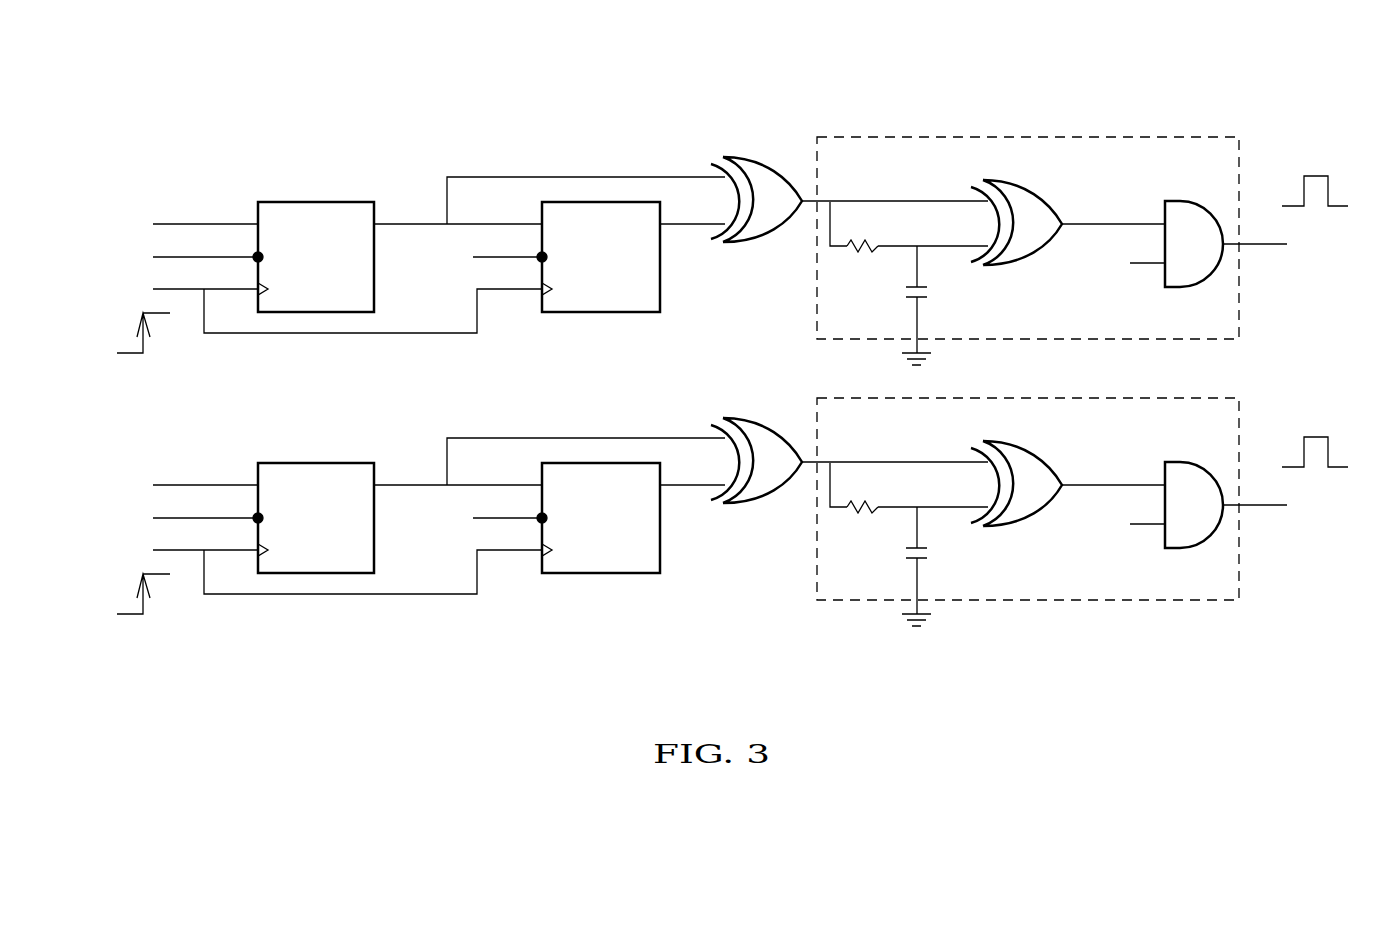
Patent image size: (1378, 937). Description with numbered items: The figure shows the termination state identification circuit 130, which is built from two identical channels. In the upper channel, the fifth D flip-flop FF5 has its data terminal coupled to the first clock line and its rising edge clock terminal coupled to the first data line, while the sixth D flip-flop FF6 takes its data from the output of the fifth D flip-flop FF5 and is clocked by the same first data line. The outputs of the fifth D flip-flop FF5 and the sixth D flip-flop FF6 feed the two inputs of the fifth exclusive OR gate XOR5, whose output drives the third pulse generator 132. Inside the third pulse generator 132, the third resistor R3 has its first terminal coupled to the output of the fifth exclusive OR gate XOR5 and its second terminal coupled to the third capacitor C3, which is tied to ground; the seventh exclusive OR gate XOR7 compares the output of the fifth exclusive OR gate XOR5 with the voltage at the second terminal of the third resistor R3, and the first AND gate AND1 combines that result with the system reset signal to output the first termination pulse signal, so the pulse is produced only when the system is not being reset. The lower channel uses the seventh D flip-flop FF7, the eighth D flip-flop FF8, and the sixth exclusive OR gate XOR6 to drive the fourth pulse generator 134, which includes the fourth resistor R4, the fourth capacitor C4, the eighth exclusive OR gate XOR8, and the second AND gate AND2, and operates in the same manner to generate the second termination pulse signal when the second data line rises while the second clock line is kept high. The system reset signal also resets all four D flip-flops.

The termination state identification circuit 130 is at (1131, 68).
The third pulse generator 132 is at (1028, 137).
The fourth pulse generator 134 is at (1029, 533).
The fifth D flip-flop FF5 is at (316, 202).
The sixth D flip-flop FF6 is at (600, 312).
The seventh D flip-flop FF7 is at (316, 490).
The eighth D flip-flop FF8 is at (601, 546).
The fifth exclusive OR gate XOR5 is at (757, 245).
The sixth exclusive OR gate XOR6 is at (757, 493).
The seventh exclusive OR gate XOR7 is at (1015, 267).
The eighth exclusive OR gate XOR8 is at (1017, 515).
The first AND gate AND1 is at (1196, 201).
The second AND gate AND2 is at (1202, 477).
The third resistor R3 is at (865, 262).
The fourth resistor R4 is at (865, 523).
The third capacitor C3 is at (936, 293).
The fourth capacitor C4 is at (936, 554).